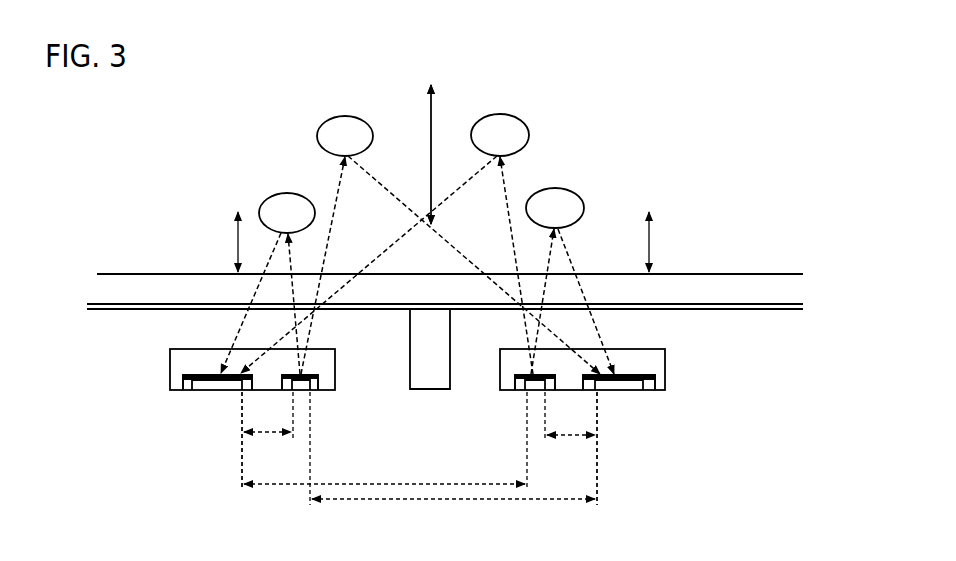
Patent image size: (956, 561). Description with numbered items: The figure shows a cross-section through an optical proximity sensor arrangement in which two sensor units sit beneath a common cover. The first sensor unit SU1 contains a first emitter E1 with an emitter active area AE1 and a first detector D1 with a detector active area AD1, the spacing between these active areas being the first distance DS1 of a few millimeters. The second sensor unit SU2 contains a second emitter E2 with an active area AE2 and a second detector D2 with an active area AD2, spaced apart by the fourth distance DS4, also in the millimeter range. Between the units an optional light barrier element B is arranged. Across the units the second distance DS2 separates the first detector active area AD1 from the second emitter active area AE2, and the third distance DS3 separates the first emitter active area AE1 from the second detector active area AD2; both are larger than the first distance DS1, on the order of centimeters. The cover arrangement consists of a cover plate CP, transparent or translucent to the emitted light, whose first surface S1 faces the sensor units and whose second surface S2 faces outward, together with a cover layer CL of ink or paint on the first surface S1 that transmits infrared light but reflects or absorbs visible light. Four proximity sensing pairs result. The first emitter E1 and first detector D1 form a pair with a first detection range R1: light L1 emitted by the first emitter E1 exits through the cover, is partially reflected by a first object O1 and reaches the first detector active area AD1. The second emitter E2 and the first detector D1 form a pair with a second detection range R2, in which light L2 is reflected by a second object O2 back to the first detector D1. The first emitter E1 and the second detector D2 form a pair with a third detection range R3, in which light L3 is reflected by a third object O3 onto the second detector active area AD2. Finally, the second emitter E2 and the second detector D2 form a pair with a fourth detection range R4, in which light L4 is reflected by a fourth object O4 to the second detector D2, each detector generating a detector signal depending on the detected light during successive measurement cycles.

The first surface S1 is at (94, 306).
The second surface S2 is at (108, 270).
The cover plate CP is at (445, 291).
The cover layer CL is at (806, 309).
The light barrier element B is at (430, 349).
The first sensor unit SU1 is at (247, 358).
The second sensor unit SU2 is at (576, 358).
The first detector D1 is at (217, 393).
The second detector D2 is at (619, 393).
The first emitter E1 is at (291, 374).
The second emitter E2 is at (543, 373).
The first detector active area AD1 is at (188, 382).
The second detector active area AD2 is at (650, 383).
The first emitter active area AE1 is at (302, 384).
The second emitter active area AE2 is at (520, 383).
The first object O1 is at (287, 213).
The second object O2 is at (500, 135).
The third object O3 is at (345, 136).
The fourth object O4 is at (555, 208).
The light L1 is at (270, 303).
The light L2 is at (387, 265).
The light L3 is at (450, 265).
The light L4 is at (572, 301).
The first detection range R1 is at (225, 242).
The second detection range R2 is at (462, 154).
The third detection range R3 is at (462, 154).
The fourth detection range R4 is at (635, 242).
The first distance DS1 is at (267, 441).
The second distance DS2 is at (384, 441).
The third distance DS3 is at (453, 457).
The fourth distance DS4 is at (571, 448).